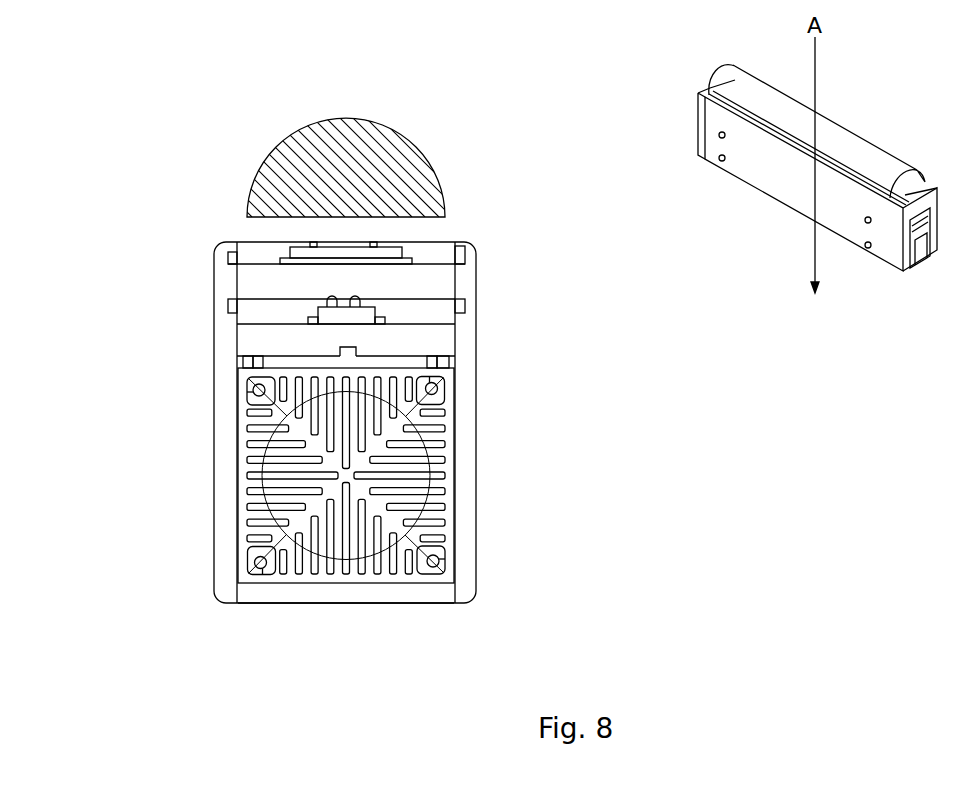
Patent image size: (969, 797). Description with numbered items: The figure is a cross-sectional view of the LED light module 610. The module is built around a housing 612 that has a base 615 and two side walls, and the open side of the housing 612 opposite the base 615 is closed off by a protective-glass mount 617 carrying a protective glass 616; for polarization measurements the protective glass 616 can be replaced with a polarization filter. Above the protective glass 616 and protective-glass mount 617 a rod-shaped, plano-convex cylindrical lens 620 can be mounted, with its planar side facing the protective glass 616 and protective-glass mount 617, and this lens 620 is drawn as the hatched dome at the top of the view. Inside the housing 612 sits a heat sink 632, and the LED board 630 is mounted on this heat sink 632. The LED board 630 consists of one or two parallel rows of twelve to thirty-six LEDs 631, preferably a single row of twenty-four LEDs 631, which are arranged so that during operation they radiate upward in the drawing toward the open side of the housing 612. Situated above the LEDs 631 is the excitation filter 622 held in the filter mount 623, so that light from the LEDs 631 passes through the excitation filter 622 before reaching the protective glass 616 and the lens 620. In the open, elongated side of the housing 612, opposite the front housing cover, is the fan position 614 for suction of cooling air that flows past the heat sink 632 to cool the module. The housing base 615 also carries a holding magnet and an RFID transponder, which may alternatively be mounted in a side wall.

The LED light module 610 is at (245, 115).
The housing 612 is at (467, 456).
The fan position 614 is at (238, 528).
The base 615 is at (368, 592).
The protective glass 616 is at (357, 252).
The protective-glass mount 617 is at (257, 252).
The lens dome 620 is at (357, 152).
The excitation filter 622 is at (347, 310).
The filter mount 623 is at (260, 313).
The LED board 630 is at (387, 360).
The LEDs 631 is at (337, 349).
The heat sink 632 is at (445, 527).